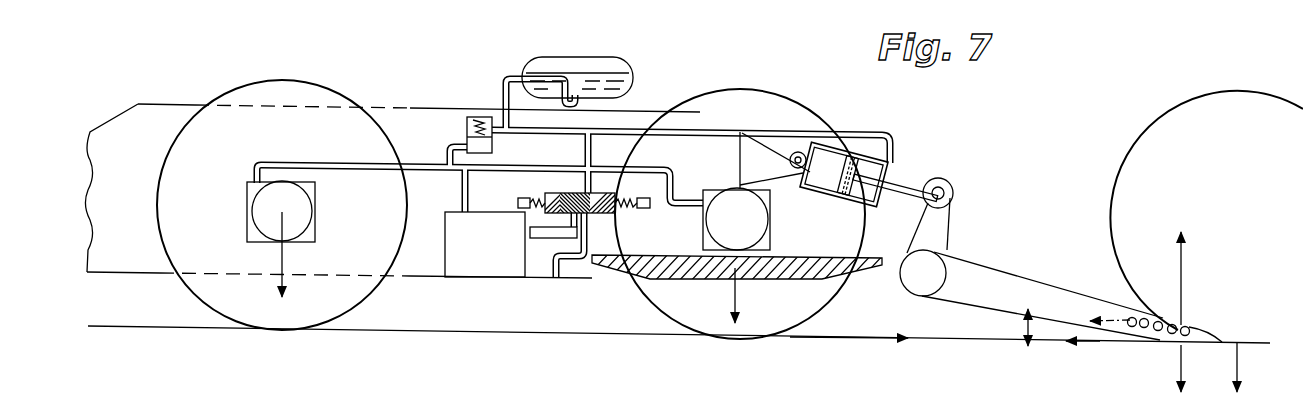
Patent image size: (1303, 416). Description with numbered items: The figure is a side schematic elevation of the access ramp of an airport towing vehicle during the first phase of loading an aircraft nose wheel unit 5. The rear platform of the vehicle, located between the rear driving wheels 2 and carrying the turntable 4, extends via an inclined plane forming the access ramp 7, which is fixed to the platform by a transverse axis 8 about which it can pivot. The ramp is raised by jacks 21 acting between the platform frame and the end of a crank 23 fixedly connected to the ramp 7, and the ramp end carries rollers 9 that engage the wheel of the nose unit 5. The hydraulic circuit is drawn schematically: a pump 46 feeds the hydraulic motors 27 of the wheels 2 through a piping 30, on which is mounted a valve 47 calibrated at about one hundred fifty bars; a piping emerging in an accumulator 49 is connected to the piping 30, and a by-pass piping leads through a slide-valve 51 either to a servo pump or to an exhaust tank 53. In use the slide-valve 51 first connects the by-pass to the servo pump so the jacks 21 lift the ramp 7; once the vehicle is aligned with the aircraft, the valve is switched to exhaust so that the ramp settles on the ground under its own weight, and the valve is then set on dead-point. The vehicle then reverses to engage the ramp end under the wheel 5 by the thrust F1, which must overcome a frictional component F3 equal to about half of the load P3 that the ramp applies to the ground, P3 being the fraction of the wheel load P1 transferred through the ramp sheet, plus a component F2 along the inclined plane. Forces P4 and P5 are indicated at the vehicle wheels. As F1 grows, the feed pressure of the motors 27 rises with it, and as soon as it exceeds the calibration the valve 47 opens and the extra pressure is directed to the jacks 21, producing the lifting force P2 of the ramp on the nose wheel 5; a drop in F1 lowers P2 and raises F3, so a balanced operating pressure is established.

The rear driving wheel 2 is at (712, 318).
The turntable 4 is at (800, 272).
The nose wheel unit 5 is at (1153, 143).
The access ramp 7 is at (992, 305).
The transverse axis 8 is at (922, 290).
The roller 9 is at (1160, 327).
The jack 21 is at (880, 167).
The crank 23 is at (942, 228).
The hydraulic motor 27 is at (265, 225).
The piping 30 is at (790, 130).
The pump 46 is at (495, 268).
The valve 47 is at (471, 117).
The accumulator 49 is at (628, 64).
The slide-valve 51 is at (603, 215).
The exhaust tank 53 is at (553, 235).
The load P1 is at (1255, 368).
The lifting force P2 is at (1200, 275).
The load P3 is at (1200, 369).
The force P4 is at (300, 259).
The force P5 is at (755, 299).
The thrust F1 is at (849, 325).
The force F2 is at (1110, 320).
The frictional component F3 is at (1094, 358).